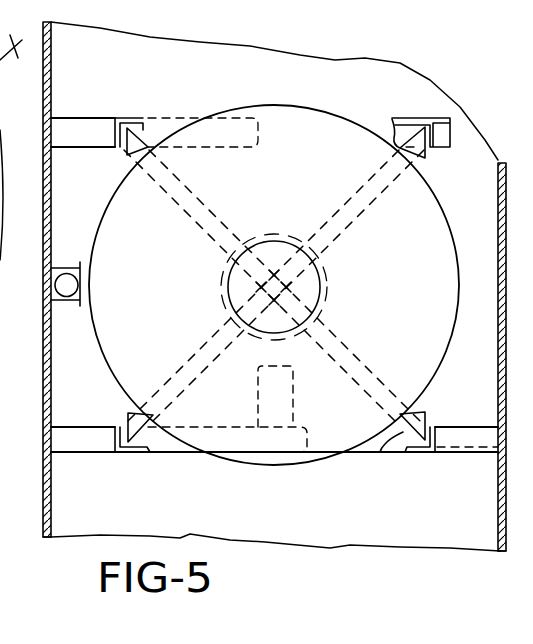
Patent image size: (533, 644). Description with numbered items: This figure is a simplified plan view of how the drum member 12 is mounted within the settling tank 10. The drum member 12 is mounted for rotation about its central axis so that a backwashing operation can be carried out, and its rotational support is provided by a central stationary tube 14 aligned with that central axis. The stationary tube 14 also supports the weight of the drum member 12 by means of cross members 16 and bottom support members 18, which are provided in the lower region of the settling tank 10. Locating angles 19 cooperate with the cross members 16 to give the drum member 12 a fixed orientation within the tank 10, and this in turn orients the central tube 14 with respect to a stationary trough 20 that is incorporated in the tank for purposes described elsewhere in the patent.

The settling tank 10 is at (43, 510).
The drum member 12 is at (478, 172).
The central stationary tube 14 is at (327, 287).
The cross members 16 is at (392, 157).
The bottom support members 18 is at (258, 397).
The locating angles 19 is at (172, 87).
The stationary trough 20 is at (63, 264).